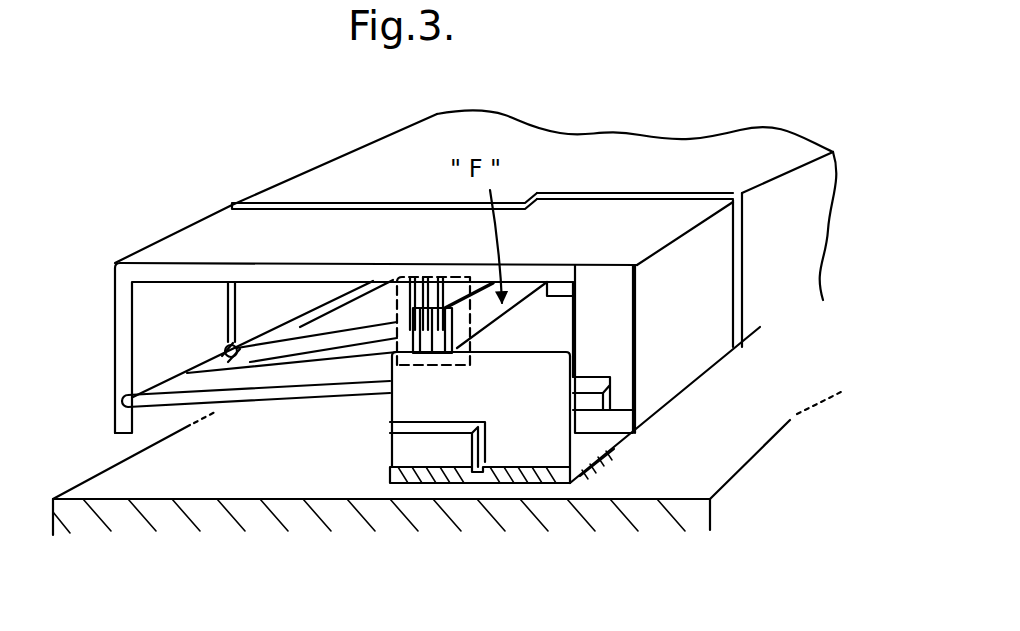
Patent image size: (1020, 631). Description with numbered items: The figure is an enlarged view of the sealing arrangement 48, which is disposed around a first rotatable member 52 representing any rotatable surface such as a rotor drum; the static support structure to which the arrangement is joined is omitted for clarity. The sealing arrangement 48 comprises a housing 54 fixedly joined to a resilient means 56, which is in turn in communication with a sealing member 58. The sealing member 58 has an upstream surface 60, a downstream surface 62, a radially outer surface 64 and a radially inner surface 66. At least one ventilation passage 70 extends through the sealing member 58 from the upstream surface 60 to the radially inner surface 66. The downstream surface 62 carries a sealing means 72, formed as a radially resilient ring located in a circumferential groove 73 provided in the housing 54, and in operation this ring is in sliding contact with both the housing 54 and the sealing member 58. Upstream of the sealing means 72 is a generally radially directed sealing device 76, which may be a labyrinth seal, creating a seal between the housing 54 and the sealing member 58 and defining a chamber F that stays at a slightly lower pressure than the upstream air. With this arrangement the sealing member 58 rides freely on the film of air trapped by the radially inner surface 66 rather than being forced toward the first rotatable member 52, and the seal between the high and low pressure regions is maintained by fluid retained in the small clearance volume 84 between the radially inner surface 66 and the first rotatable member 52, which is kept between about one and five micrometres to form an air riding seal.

The sealing arrangement 48 is at (625, 225).
The first rotatable member 52 is at (115, 472).
The housing 54 is at (182, 247).
The resilient means 56 is at (187, 382).
The sealing member 58 is at (507, 431).
The upstream surface 60 is at (390, 460).
The downstream surface 62 is at (578, 445).
The radially outer surface 64 is at (535, 325).
The radially inner surface 66 is at (543, 483).
The ventilation passage 70 is at (400, 425).
The sealing means 72 is at (590, 407).
The circumferential groove 73 is at (605, 380).
The sealing device 76 is at (453, 270).
The clearance volume 84 is at (424, 494).